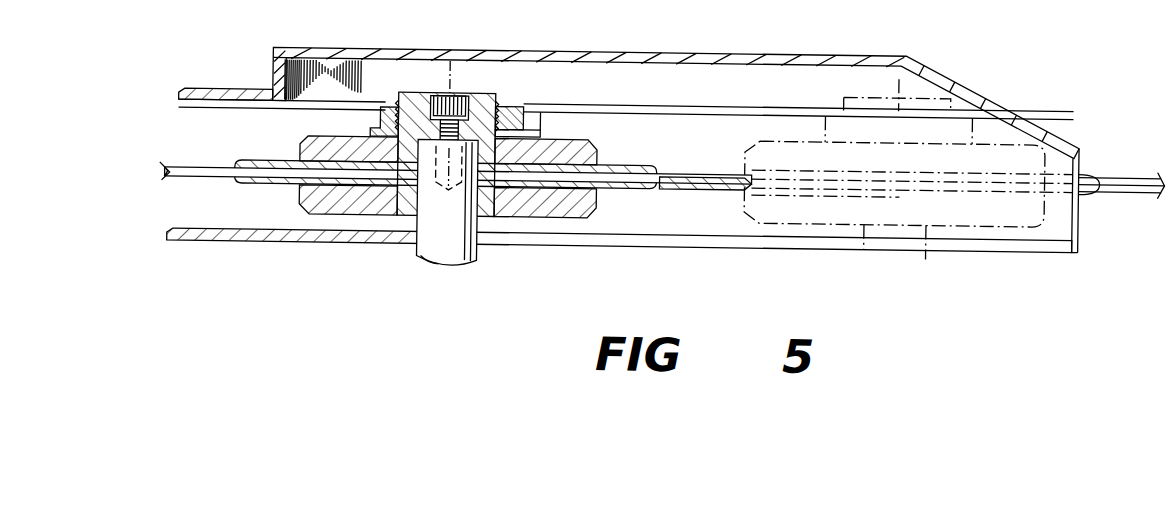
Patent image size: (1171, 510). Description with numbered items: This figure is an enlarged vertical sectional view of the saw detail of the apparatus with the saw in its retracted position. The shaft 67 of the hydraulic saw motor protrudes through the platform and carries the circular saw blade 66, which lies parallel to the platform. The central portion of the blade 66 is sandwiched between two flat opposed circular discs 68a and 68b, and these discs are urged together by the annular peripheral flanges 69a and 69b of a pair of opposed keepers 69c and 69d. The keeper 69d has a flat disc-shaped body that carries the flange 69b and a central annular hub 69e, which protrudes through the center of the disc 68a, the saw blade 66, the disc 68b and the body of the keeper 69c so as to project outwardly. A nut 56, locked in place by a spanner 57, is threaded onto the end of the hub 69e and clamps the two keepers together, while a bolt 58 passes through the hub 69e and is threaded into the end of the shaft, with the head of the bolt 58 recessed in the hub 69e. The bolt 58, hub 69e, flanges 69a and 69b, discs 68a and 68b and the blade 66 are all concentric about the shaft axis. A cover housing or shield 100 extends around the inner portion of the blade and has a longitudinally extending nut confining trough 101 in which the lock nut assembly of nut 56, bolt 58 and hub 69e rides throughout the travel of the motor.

The cover housing or shield 100 is at (210, 97).
The nut confining trough 101 is at (405, 70).
The nut 56 is at (510, 108).
The spanner 57 is at (525, 131).
The bolt 58 is at (452, 105).
The circular saw blade 66 is at (707, 182).
The shaft 67 is at (447, 244).
The disc 68a is at (628, 187).
The disc 68b is at (647, 172).
The annular peripheral flange 69a is at (302, 159).
The annular peripheral flange 69b is at (302, 196).
The keeper 69c is at (358, 135).
The keeper 69d is at (372, 211).
The central annular hub 69e is at (423, 97).